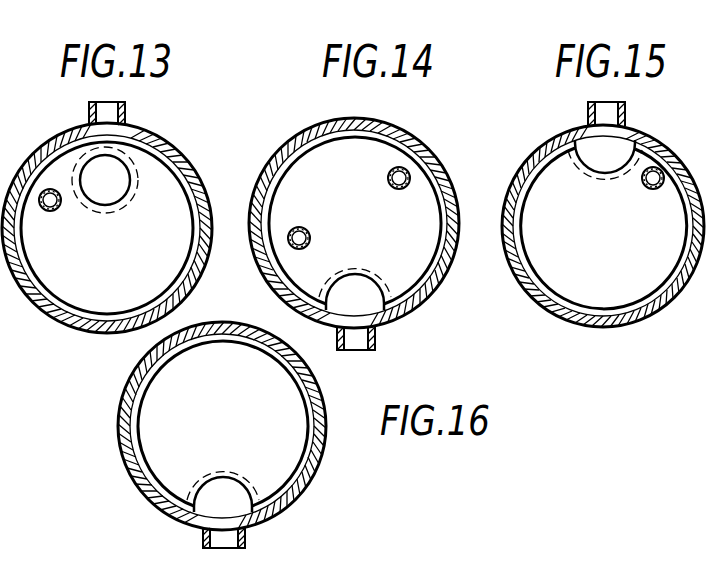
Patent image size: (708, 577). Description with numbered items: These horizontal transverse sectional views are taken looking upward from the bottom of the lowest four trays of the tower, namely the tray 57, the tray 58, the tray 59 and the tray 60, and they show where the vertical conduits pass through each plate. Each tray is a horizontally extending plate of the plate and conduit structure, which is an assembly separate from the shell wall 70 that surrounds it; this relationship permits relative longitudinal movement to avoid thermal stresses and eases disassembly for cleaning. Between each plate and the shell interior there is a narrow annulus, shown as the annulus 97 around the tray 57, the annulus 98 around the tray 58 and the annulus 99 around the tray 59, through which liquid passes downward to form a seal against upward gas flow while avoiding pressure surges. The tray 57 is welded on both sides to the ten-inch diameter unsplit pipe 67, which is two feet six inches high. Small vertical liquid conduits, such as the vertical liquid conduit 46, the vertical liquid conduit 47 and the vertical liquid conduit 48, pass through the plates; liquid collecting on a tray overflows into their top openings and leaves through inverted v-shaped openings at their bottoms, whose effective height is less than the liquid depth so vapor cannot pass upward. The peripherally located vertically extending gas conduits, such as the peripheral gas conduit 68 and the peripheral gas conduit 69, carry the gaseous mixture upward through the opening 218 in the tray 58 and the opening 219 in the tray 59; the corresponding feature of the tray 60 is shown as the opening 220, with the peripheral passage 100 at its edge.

In FIG. 13, the wall 70 is at (57, 142).
In FIG. 14, the wall 70 is at (290, 168).
In FIG. 15, the wall 70 is at (538, 144).
In FIG. 16, the wall 70 is at (308, 483).
In FIG. 13, the annulus 97 is at (157, 148).
In FIG. 13, the tray 57 is at (70, 296).
In FIG. 13, the pipe 67 is at (126, 186).
In FIG. 13, the vertical liquid conduit 46 is at (57, 212).
In FIG. 14, the annulus 98 is at (428, 280).
In FIG. 14, the tray 58 is at (368, 152).
In FIG. 14, the peripheral gas conduit 68 is at (370, 288).
In FIG. 14, the opening 218 is at (350, 258).
In FIG. 14, the vertical liquid conduit 48 is at (388, 176).
In FIG. 15, the vertical liquid conduit 48 is at (658, 192).
In FIG. 14, the vertical liquid conduit 47 is at (332, 203).
In FIG. 15, the annulus 99 is at (647, 310).
In FIG. 15, the tray 59 is at (578, 293).
In FIG. 15, the peripheral gas conduit 69 is at (623, 147).
In FIG. 15, the opening 219 is at (603, 162).
In FIG. 16, the liner 100 is at (132, 402).
In FIG. 16, the tray 60 is at (292, 393).
In FIG. 16, the notch recess 220 is at (247, 447).